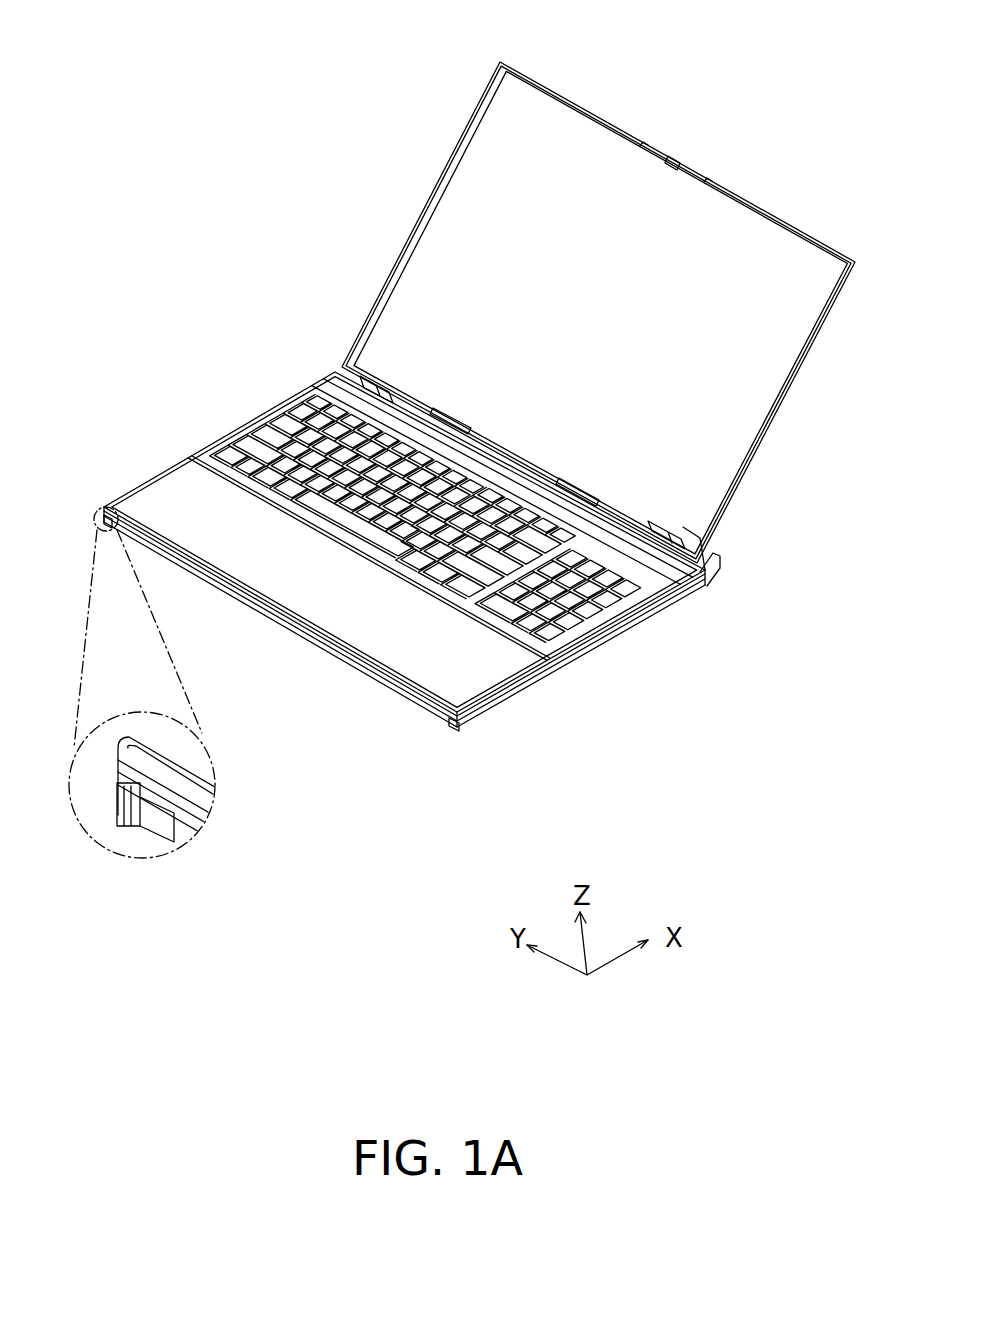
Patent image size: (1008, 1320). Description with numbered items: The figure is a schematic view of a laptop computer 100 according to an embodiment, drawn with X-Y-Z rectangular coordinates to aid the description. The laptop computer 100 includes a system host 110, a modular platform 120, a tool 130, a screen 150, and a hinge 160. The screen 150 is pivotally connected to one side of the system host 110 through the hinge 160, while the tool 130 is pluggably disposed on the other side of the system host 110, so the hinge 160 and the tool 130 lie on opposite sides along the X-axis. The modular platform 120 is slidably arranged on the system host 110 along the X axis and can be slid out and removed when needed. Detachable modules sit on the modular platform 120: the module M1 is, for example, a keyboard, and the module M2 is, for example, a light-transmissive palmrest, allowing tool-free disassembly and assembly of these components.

The laptop computer 100 is at (834, 792).
The system host 110 is at (583, 657).
The modular platform 120 is at (385, 451).
The tool 130 is at (447, 722).
The screen 150 is at (740, 494).
The hinge 160 is at (378, 390).
The module (keyboard) M1 is at (267, 427).
The module (palmrest) M2 is at (157, 493).